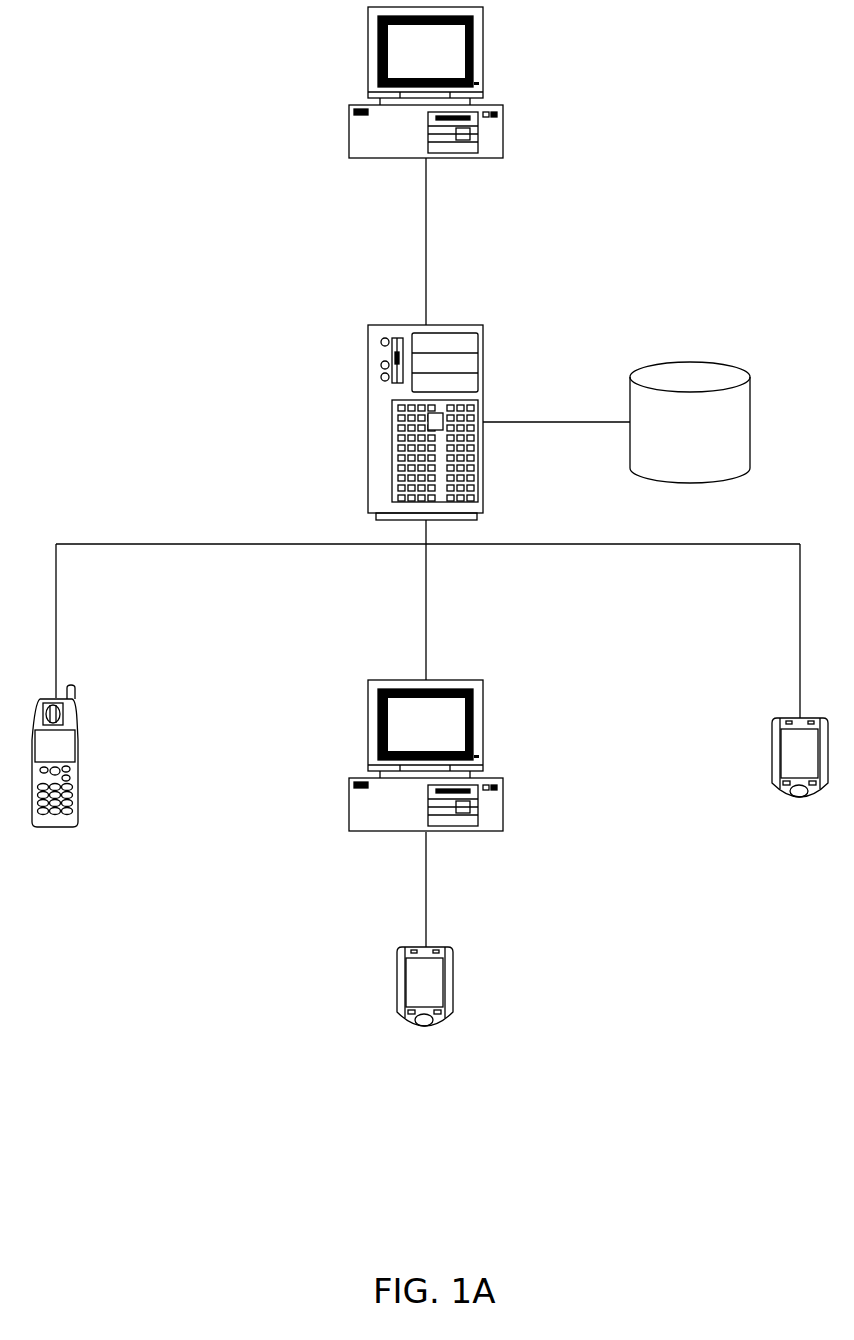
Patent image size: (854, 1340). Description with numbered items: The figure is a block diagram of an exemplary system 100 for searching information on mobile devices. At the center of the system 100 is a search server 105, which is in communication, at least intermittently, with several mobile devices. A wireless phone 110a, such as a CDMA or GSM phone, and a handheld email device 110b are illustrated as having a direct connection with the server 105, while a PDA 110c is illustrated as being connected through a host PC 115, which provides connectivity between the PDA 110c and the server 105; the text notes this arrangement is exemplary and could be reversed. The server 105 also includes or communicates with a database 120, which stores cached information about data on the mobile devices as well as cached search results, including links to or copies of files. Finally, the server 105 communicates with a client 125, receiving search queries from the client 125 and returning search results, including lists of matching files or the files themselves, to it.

The system 100 is at (603, 1085).
The search server 105 is at (367, 423).
The wireless phone 110a is at (78, 757).
The handheld email device 110b is at (772, 758).
The PDA 110c is at (397, 988).
The host PC 115 is at (348, 795).
The database 120 is at (752, 422).
The client 125 is at (350, 120).